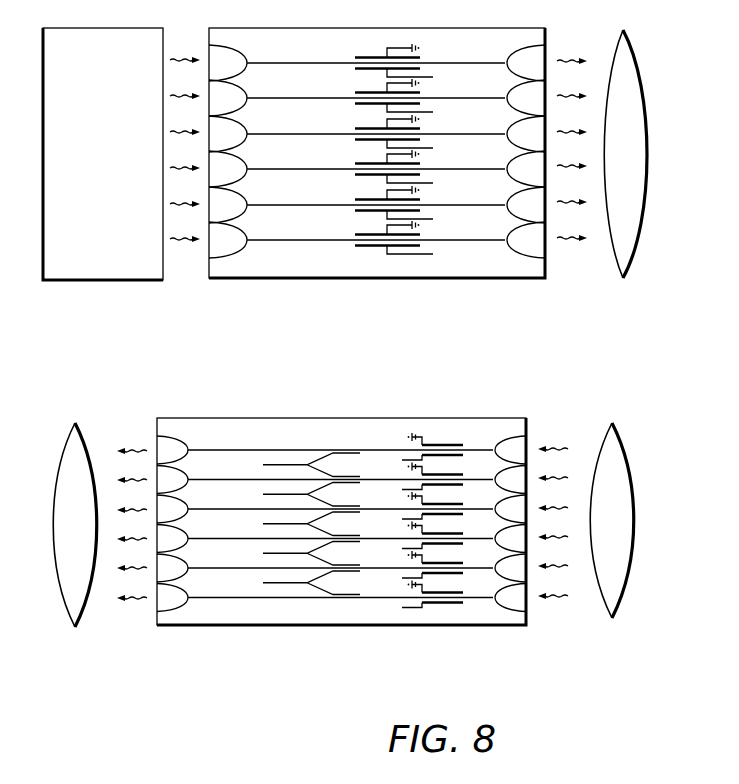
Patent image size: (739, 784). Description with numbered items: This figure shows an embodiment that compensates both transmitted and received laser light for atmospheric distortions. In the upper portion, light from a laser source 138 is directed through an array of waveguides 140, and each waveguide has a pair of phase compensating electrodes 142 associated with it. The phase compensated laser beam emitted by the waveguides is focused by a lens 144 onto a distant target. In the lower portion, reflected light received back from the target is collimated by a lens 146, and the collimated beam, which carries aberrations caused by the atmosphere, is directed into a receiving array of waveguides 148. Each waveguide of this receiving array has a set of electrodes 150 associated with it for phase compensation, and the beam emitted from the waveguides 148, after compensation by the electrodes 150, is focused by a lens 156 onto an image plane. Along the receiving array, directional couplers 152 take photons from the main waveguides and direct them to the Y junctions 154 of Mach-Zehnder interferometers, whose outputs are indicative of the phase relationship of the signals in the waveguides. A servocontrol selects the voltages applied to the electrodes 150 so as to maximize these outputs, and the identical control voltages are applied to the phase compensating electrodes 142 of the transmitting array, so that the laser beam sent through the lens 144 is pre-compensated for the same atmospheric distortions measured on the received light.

The laser source 138 is at (63, 282).
The array of waveguides 140 is at (300, 207).
The phase compensating electrodes 142 is at (367, 248).
The lens 144 is at (628, 267).
The lens 146 is at (613, 423).
The receiving array of waveguides 148 is at (481, 478).
The electrodes 150 is at (433, 437).
The directional couplers 152 is at (344, 443).
The Y junctions 154 is at (307, 463).
The lens 156 is at (76, 423).